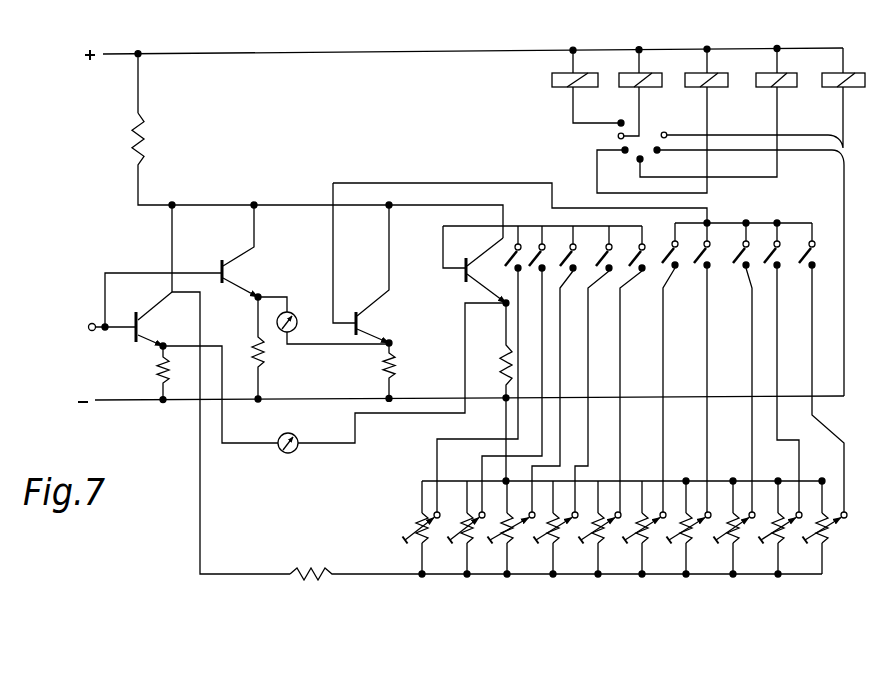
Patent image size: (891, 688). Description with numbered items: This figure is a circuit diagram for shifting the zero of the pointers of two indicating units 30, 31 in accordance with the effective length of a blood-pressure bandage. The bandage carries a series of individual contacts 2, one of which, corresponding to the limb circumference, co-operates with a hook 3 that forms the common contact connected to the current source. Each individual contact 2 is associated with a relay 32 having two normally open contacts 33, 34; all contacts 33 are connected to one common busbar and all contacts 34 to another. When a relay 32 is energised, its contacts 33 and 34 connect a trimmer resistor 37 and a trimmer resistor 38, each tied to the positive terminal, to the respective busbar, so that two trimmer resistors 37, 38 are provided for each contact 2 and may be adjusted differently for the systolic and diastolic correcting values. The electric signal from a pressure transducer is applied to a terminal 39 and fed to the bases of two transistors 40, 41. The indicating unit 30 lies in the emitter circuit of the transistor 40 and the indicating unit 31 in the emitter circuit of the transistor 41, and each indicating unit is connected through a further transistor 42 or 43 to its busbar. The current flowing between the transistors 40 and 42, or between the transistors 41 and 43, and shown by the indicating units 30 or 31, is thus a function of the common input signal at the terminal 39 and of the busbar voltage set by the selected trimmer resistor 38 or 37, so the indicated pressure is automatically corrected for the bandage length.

The individual contact 2 is at (630, 138).
The hook 3 is at (666, 124).
The indicating unit 30 is at (299, 313).
The indicating unit 31 is at (301, 455).
The relay 32 is at (567, 88).
The normally open contact 33 is at (509, 262).
The normally open contact 34 is at (703, 250).
The trimmer resistor 37 is at (604, 537).
The trimmer resistor 38 is at (829, 536).
The terminal 39 is at (97, 328).
The transistor 40 is at (248, 252).
The transistor 41 is at (157, 320).
The further transistor 42 is at (380, 275).
The further transistor 43 is at (477, 272).